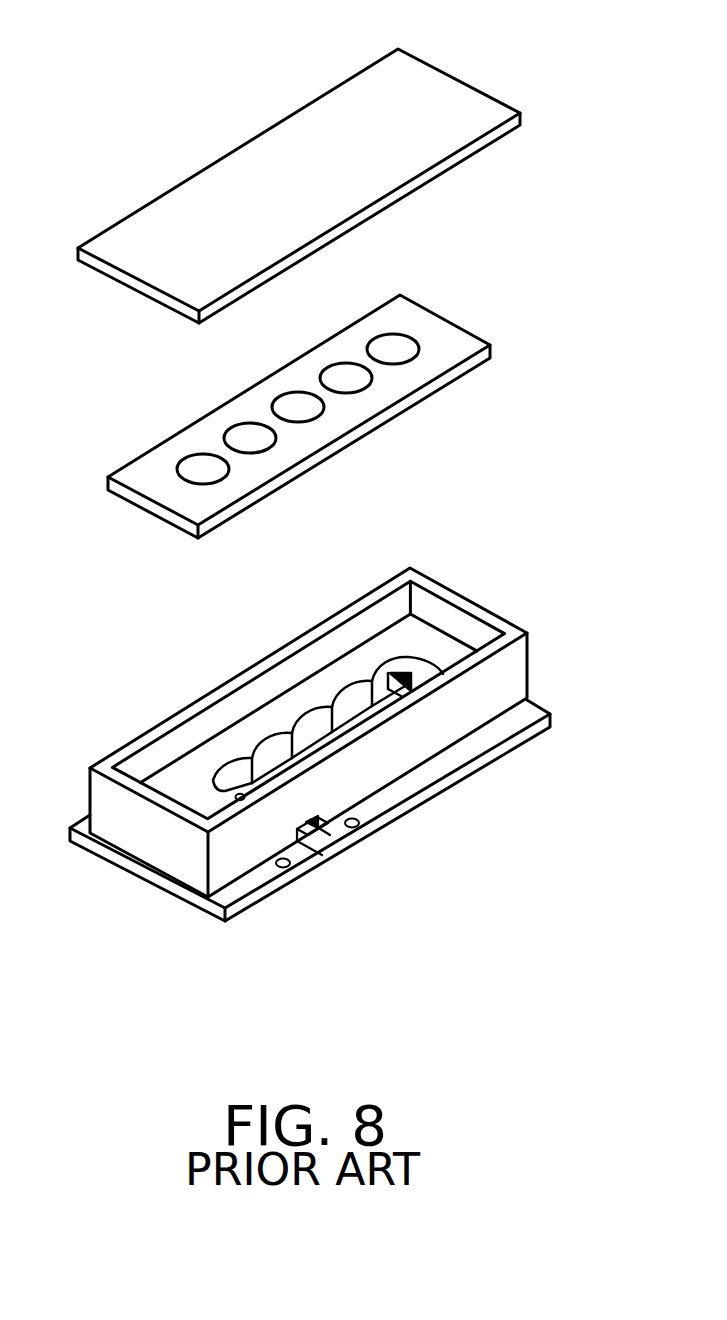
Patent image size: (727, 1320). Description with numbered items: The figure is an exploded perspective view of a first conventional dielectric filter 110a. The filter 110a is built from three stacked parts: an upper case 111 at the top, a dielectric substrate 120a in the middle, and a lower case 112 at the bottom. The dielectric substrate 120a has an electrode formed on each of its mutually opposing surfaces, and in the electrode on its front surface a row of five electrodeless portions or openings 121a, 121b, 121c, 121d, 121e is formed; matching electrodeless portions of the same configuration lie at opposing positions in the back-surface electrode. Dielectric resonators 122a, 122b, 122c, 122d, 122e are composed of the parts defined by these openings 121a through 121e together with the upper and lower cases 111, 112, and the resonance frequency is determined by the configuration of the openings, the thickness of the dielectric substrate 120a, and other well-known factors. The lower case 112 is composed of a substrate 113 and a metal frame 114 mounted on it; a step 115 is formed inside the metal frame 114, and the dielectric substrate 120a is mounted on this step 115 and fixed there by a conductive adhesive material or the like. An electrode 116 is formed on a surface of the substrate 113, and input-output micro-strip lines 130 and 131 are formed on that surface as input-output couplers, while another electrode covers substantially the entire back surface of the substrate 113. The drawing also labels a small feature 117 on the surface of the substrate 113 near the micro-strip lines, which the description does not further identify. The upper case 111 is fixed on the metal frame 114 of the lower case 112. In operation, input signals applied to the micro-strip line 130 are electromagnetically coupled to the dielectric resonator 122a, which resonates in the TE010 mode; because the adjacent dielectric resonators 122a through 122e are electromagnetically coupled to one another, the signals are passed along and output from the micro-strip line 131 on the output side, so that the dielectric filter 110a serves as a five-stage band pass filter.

The dielectric filter 110a is at (210, 58).
The upper case 111 is at (453, 100).
The dielectric substrate 120a is at (345, 402).
The opening 121a is at (207, 470).
The opening 121b is at (253, 438).
The opening 121c is at (300, 408).
The opening 121d is at (347, 377).
The opening 121e is at (393, 350).
The dielectric resonator 122a is at (233, 479).
The dielectric resonator 122b is at (285, 453).
The dielectric resonator 122c is at (333, 422).
The dielectric resonator 122d is at (382, 395).
The dielectric resonator 122e is at (418, 362).
The lower case 112 is at (341, 762).
The substrate 113 is at (322, 843).
The metal frame 114 is at (153, 853).
The step 115 is at (425, 635).
The electrode 116 is at (238, 890).
The positioning hole 117 is at (298, 863).
The micro-strip line 130 is at (320, 848).
The micro-strip line 131 is at (373, 687).